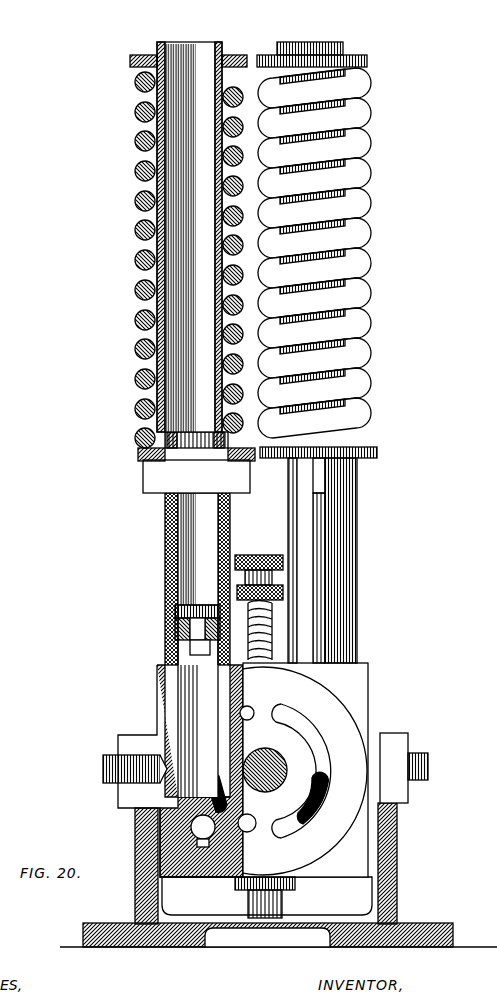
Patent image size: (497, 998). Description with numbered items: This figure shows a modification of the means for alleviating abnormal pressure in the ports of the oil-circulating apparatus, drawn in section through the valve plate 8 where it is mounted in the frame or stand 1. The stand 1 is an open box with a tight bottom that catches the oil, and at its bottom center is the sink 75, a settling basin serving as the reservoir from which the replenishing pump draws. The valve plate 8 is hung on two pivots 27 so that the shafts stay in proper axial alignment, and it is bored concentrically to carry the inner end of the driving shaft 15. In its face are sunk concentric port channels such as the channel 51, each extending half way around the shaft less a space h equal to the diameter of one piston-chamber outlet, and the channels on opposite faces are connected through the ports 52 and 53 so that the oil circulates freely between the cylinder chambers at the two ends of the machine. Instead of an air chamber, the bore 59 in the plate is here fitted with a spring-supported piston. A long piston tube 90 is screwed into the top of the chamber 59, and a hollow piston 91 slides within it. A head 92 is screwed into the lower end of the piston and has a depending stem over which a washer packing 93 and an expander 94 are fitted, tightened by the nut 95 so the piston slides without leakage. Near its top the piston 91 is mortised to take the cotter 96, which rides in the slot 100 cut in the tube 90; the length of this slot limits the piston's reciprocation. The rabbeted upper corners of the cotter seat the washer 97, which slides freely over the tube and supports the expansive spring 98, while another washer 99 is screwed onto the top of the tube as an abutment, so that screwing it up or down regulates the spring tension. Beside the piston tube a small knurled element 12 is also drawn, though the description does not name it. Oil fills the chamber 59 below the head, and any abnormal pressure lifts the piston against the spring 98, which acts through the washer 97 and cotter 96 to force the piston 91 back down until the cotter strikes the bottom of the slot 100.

The frame or stand 1 is at (135, 836).
The valve plate 8 is at (263, 770).
The adjusting knob 12 is at (259, 599).
The driving shaft 15 is at (265, 762).
The pivots 27 is at (103, 770).
The port channel 51 is at (301, 771).
The port 52 is at (217, 783).
The port 53 is at (331, 775).
The bore or chamber 59 is at (200, 700).
The sink or reservoir 75 is at (260, 905).
The piston tube 90 is at (165, 523).
The hollow piston 91 is at (165, 563).
The head 92 is at (175, 611).
The washer packing 93 is at (175, 625).
The expander 94 is at (175, 638).
The nut 95 is at (190, 652).
The cotter 96 is at (150, 475).
The washer 97 is at (138, 453).
The expansive spring 98 is at (135, 285).
The washer 99 is at (130, 57).
The slot 100 is at (140, 392).
The space h is at (253, 710).